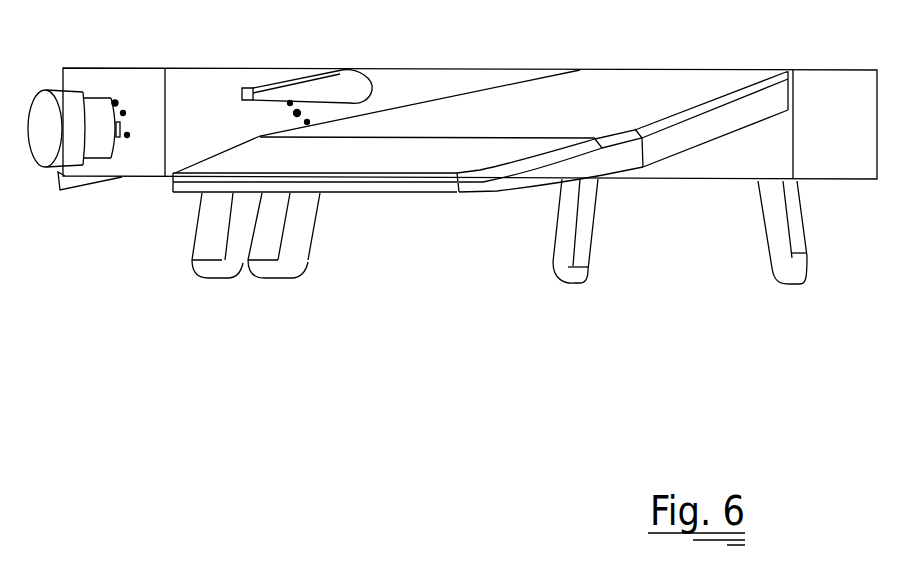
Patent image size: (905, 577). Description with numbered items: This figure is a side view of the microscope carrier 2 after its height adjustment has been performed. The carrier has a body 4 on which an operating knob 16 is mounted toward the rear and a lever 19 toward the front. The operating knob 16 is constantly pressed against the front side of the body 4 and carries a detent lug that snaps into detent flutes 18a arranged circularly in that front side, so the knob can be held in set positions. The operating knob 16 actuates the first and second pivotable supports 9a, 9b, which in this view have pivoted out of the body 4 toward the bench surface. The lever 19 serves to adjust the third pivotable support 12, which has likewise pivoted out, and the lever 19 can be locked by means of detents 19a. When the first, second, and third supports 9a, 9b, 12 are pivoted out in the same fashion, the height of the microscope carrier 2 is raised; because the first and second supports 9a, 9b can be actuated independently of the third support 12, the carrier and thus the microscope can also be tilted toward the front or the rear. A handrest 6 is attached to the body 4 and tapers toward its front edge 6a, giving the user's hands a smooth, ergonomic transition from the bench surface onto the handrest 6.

The microscope carrier 2 is at (478, 268).
The body 4 is at (470, 76).
The handrest 6 is at (613, 88).
The front edge 6a is at (381, 193).
The first pivotable support 9a is at (573, 208).
The second pivotable support 9b is at (793, 218).
The third pivotable support 12 is at (193, 268).
The operating knob 16 is at (42, 117).
The detent flutes 18a is at (127, 133).
The lever 19 is at (348, 83).
The detents 19a is at (304, 122).